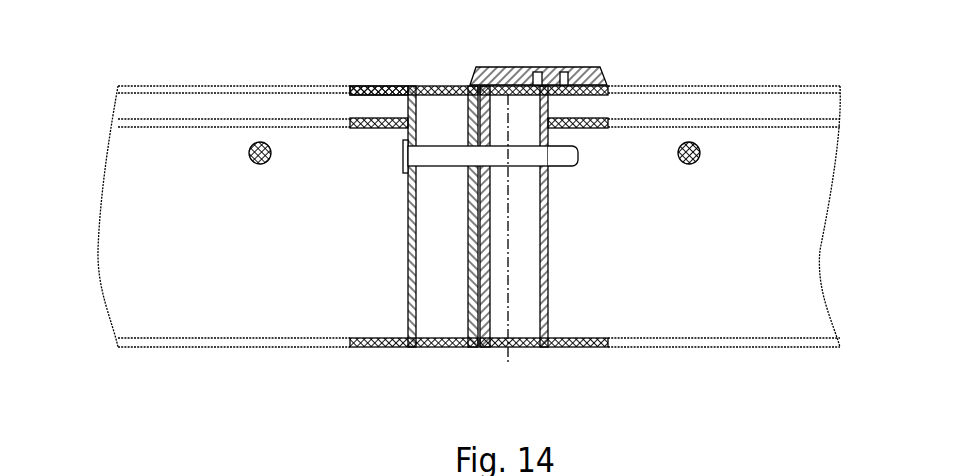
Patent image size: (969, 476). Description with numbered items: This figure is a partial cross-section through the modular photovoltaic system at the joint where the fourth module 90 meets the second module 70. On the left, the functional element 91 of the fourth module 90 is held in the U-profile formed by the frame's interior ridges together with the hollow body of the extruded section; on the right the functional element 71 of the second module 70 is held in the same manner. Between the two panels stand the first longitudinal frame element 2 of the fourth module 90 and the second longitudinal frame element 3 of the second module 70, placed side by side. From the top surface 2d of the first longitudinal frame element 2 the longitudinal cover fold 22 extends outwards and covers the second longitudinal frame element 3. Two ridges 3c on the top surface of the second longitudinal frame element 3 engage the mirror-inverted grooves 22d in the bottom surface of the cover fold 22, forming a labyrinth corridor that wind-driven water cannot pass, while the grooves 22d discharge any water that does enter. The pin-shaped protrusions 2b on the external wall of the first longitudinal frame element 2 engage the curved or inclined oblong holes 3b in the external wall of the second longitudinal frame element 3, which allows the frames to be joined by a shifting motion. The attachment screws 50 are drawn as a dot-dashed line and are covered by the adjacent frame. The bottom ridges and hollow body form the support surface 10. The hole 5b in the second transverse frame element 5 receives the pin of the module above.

The first longitudinal frame element 2 is at (410, 207).
The protrusions 2b is at (433, 158).
The top surface of the first longitudinal frame element 2d is at (388, 73).
The second longitudinal frame element 3 is at (548, 242).
The holes 3b is at (550, 163).
The ridges 3c is at (541, 80).
The second transverse frame element 5 is at (234, 308).
The hole 5b is at (257, 165).
The support surface 10 is at (487, 205).
The longitudinal cover fold 22 is at (481, 72).
The grooves 22d is at (534, 76).
The attachment screws 50 is at (508, 311).
The second module 70 is at (763, 234).
The functional element 71 is at (760, 107).
The fourth module 90 is at (142, 238).
The functional element 91 is at (203, 105).